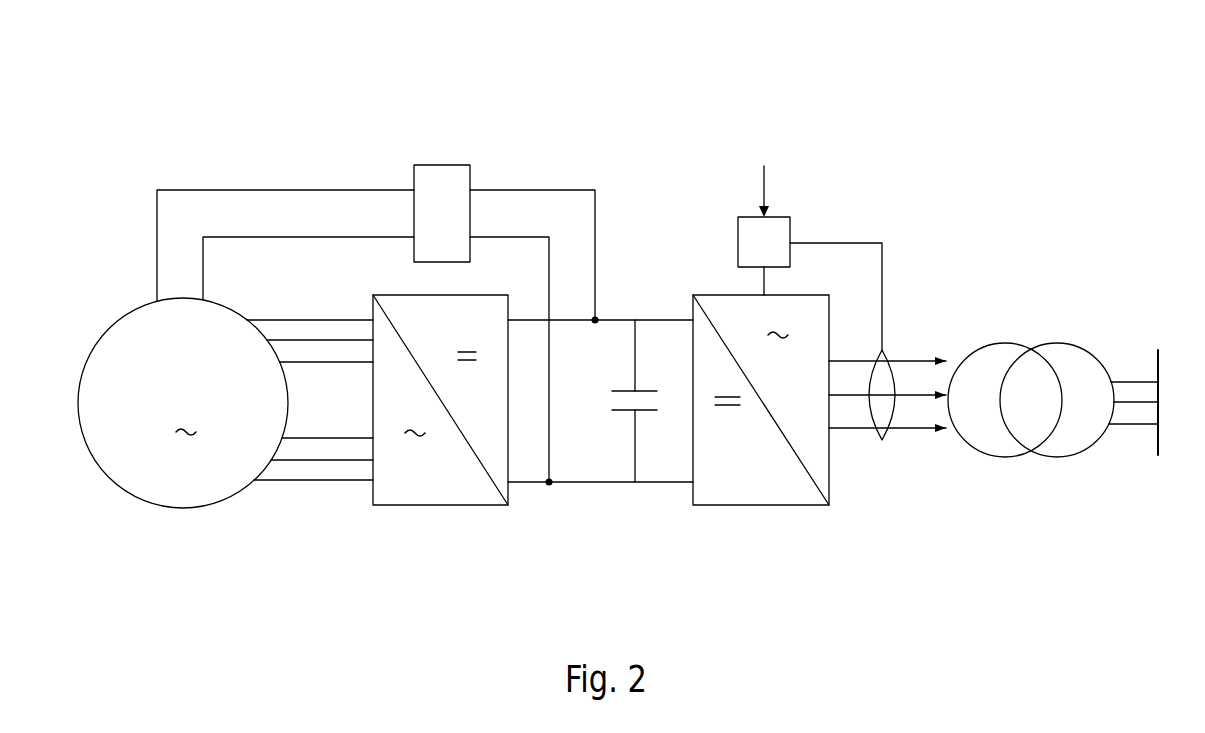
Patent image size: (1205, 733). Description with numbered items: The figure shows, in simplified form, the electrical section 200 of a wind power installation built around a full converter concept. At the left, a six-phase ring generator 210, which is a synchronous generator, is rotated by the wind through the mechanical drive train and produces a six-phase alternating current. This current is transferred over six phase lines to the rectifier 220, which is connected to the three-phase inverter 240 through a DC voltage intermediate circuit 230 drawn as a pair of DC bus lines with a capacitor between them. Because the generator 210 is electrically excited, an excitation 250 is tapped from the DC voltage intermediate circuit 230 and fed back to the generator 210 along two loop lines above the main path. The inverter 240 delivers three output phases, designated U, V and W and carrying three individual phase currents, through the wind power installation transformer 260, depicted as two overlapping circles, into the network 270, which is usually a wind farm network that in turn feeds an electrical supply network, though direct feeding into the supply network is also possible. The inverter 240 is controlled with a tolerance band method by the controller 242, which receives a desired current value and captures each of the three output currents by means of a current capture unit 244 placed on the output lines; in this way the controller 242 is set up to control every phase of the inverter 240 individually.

The electrical section 200 is at (896, 117).
The six-phase ring generator 210 is at (193, 487).
The rectifier 220 is at (450, 500).
The DC voltage intermediate circuit 230 is at (610, 492).
The three-phase inverter 240 is at (770, 495).
The controller 242 is at (782, 230).
The current capture unit 244 is at (893, 338).
The excitation 250 is at (443, 172).
The wind power installation transformer 260 is at (1025, 467).
The network 270 is at (1153, 438).